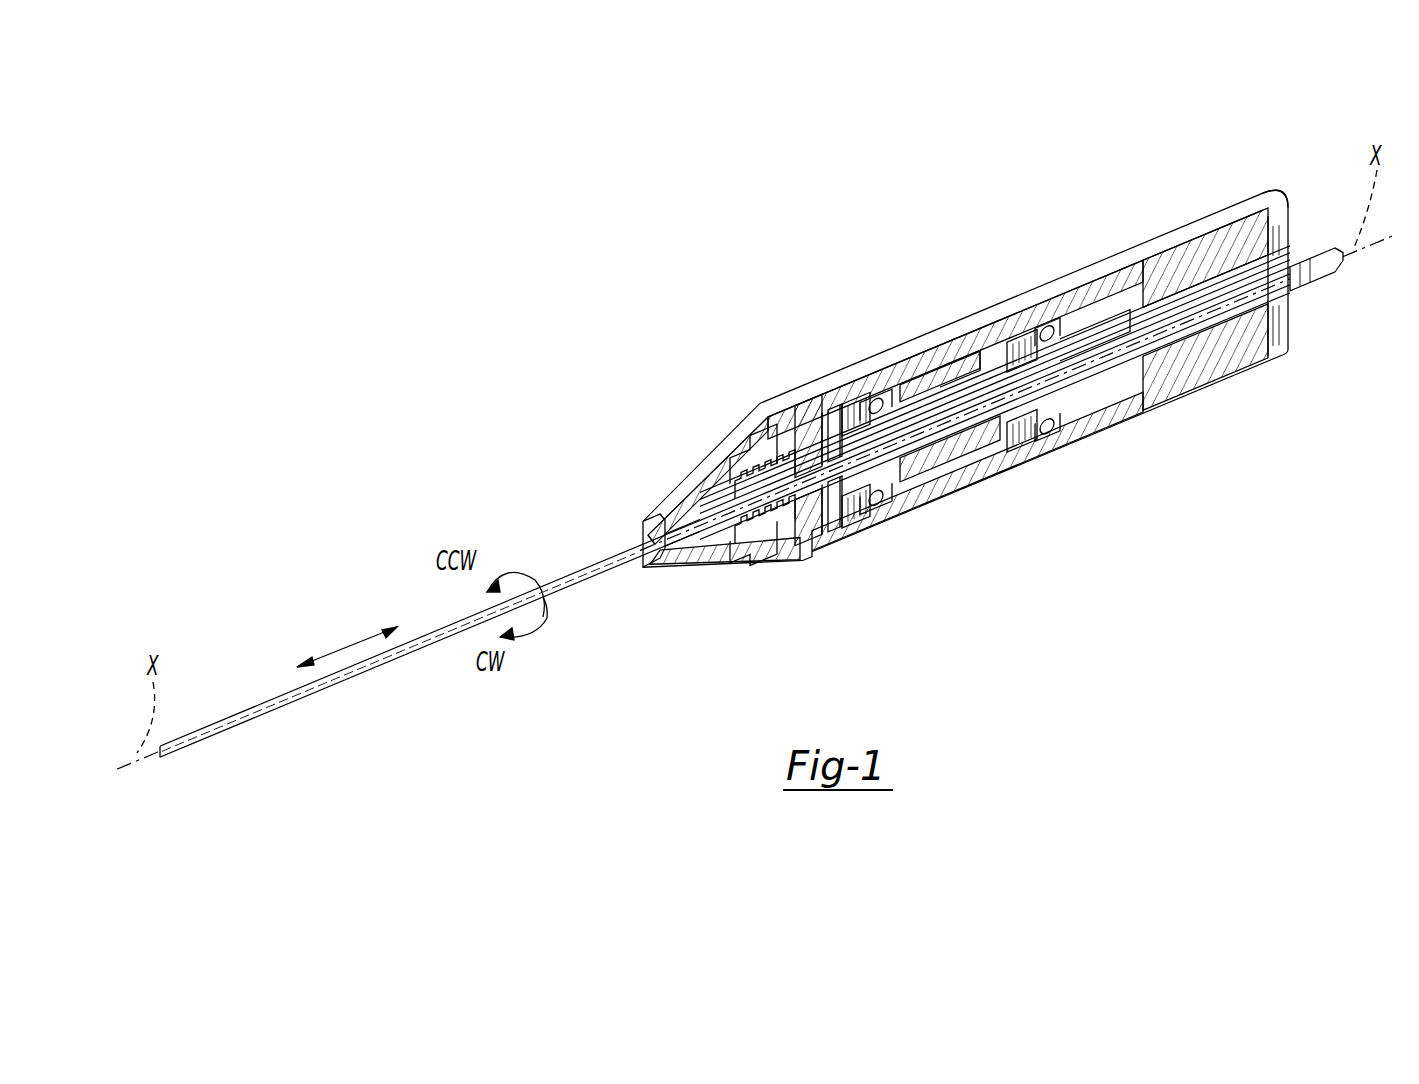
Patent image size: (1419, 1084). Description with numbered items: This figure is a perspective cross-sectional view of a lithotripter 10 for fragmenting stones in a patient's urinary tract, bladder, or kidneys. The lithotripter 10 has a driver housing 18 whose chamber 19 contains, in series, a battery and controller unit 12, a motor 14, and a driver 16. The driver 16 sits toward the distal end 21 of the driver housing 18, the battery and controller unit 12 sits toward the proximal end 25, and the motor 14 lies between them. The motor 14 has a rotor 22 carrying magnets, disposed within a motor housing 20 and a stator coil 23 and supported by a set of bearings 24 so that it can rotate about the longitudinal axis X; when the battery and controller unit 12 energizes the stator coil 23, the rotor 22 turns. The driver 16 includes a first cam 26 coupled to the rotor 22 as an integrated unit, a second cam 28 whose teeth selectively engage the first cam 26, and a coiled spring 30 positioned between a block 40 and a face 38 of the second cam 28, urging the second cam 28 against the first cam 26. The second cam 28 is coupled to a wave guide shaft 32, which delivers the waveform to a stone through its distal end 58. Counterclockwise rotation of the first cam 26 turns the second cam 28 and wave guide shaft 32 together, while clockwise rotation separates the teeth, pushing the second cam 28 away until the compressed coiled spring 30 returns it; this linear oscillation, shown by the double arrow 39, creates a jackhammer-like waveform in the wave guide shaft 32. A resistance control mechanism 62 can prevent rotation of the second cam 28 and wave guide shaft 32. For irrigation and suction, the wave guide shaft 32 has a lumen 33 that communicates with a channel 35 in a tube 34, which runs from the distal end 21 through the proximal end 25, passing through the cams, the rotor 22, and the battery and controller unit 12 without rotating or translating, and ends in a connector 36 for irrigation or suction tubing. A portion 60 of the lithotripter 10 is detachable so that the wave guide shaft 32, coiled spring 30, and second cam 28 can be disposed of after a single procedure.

The lithotripter 10 is at (725, 322).
The battery and controller unit 12 is at (1240, 357).
The motor 14 is at (982, 306).
The driver 16 is at (821, 368).
The driver housing 18 is at (1165, 233).
The chamber 19 is at (1110, 327).
The motor housing 20 is at (960, 487).
The distal end 21 is at (703, 567).
The rotor 22 is at (960, 440).
The stator coil 23 is at (958, 373).
The bearings 24 is at (893, 383).
The proximal end 25 is at (1257, 195).
The first cam 26 is at (840, 503).
The second cam 28 is at (827, 427).
The coiled spring 30 is at (797, 453).
The wave guide shaft 32 is at (620, 562).
The lumen 33 is at (313, 693).
The tube 34 is at (1150, 395).
The channel 35 is at (1237, 353).
The connector 36 is at (1320, 243).
The face 38 is at (830, 510).
The double arrow 39 is at (347, 647).
The block 40 is at (747, 540).
The distal end 58 is at (160, 752).
The portion 60 is at (713, 463).
The resistance control mechanism 62 is at (670, 530).